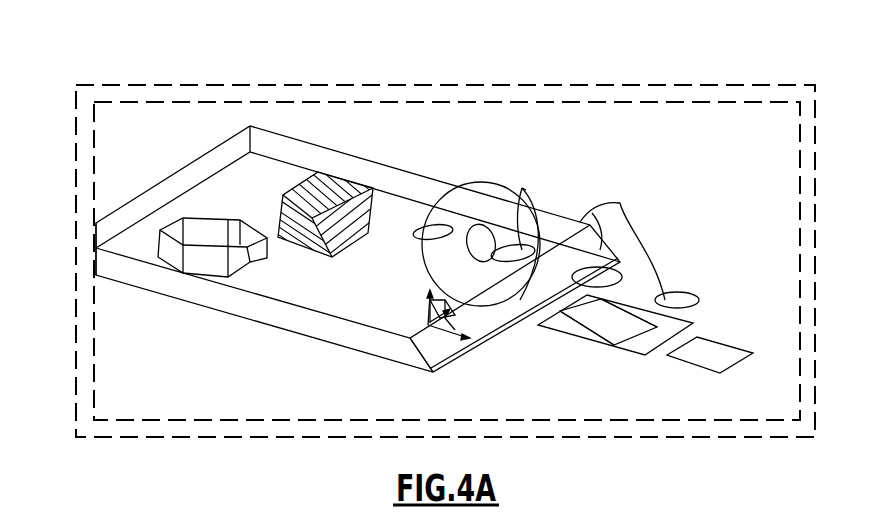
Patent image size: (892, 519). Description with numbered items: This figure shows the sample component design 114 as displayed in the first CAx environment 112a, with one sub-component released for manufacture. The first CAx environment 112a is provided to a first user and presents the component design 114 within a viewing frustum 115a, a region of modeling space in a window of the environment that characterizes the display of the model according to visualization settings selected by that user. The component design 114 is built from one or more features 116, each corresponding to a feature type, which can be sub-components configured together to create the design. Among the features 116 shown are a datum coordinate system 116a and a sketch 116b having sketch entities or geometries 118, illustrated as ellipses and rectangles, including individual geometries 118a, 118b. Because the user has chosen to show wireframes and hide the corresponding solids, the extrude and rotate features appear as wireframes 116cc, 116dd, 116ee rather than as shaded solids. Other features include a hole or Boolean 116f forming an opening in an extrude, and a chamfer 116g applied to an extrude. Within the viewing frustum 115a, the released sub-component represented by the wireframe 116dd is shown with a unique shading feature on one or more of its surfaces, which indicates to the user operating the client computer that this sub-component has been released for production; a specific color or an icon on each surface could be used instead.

The first CAx environment 112a is at (217, 78).
The viewing frustum 115a is at (124, 94).
The component design 114 is at (180, 160).
The features 116 is at (620, 204).
The datum coordinate system 116a is at (420, 350).
The sketch 116b is at (711, 310).
The wireframe 116cc is at (416, 166).
The wireframe 116dd is at (356, 168).
The wireframe geometry 116ee is at (508, 182).
The hole or Boolean 116f is at (204, 210).
The chamfer 116g is at (430, 340).
The sketch entities or geometries 118 is at (505, 305).
The sketch geometry 118a is at (283, 240).
The sketch geometry 118b is at (525, 190).